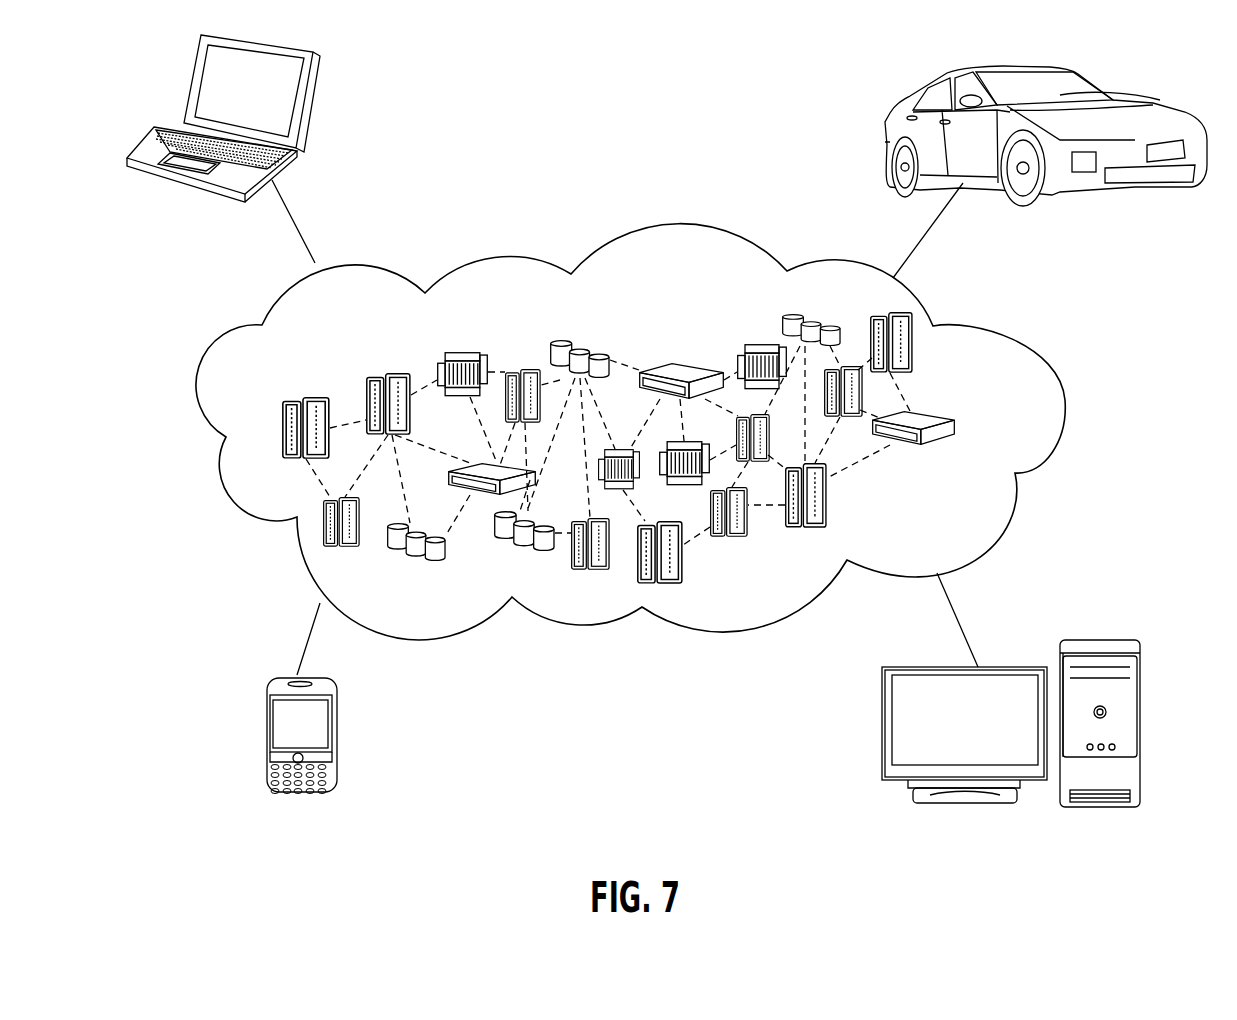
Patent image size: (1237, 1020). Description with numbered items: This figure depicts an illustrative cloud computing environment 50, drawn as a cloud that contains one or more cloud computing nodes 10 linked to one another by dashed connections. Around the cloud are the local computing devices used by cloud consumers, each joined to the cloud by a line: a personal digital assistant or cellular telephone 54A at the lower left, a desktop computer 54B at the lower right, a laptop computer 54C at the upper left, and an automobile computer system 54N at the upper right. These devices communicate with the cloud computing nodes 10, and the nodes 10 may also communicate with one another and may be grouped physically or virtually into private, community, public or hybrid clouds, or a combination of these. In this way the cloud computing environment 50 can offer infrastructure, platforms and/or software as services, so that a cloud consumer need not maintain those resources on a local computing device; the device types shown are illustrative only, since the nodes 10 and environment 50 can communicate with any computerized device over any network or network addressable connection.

The cloud computing node 10 is at (1000, 427).
The cloud computing environment 50 is at (1020, 342).
The cellular telephone 54A is at (270, 742).
The desktop computer 54B is at (1105, 640).
The laptop computer 54C is at (307, 107).
The automobile computer system 54N is at (895, 113).